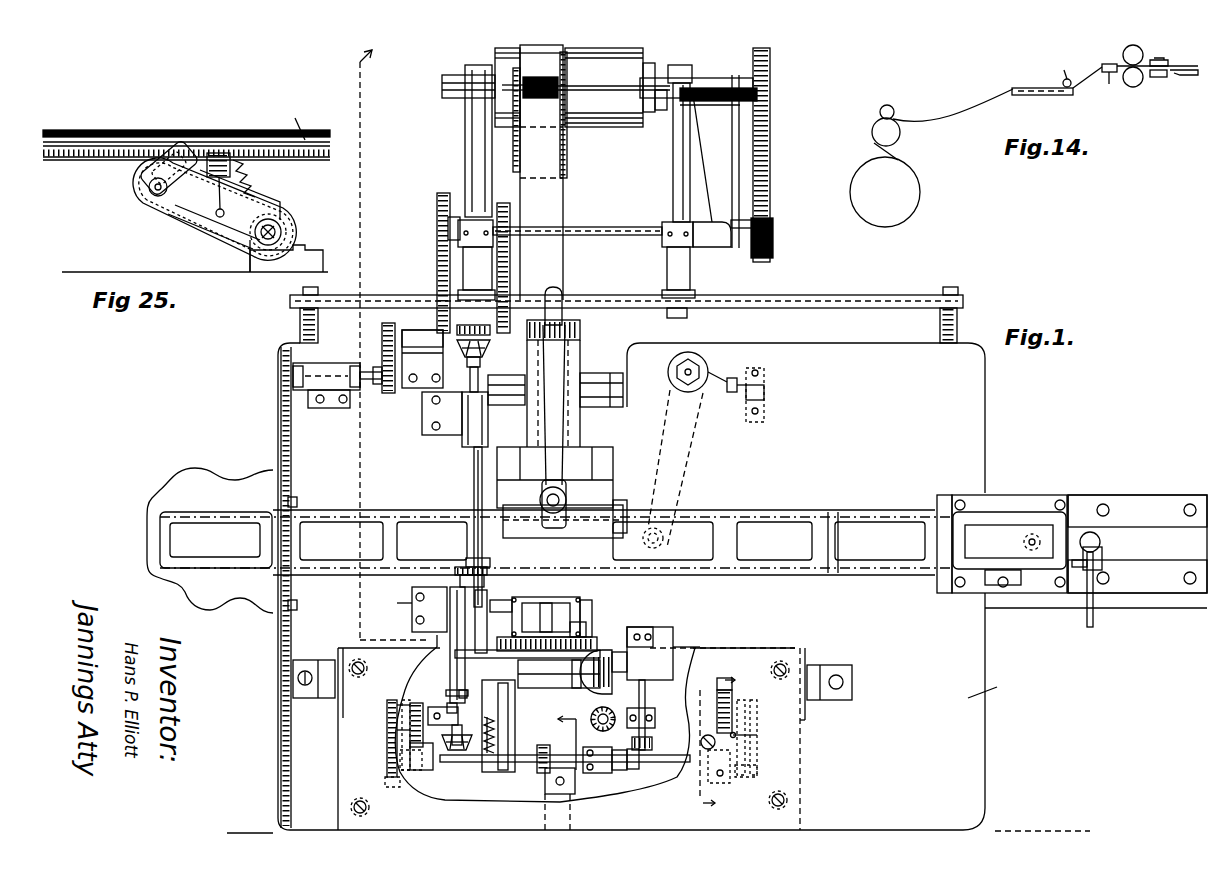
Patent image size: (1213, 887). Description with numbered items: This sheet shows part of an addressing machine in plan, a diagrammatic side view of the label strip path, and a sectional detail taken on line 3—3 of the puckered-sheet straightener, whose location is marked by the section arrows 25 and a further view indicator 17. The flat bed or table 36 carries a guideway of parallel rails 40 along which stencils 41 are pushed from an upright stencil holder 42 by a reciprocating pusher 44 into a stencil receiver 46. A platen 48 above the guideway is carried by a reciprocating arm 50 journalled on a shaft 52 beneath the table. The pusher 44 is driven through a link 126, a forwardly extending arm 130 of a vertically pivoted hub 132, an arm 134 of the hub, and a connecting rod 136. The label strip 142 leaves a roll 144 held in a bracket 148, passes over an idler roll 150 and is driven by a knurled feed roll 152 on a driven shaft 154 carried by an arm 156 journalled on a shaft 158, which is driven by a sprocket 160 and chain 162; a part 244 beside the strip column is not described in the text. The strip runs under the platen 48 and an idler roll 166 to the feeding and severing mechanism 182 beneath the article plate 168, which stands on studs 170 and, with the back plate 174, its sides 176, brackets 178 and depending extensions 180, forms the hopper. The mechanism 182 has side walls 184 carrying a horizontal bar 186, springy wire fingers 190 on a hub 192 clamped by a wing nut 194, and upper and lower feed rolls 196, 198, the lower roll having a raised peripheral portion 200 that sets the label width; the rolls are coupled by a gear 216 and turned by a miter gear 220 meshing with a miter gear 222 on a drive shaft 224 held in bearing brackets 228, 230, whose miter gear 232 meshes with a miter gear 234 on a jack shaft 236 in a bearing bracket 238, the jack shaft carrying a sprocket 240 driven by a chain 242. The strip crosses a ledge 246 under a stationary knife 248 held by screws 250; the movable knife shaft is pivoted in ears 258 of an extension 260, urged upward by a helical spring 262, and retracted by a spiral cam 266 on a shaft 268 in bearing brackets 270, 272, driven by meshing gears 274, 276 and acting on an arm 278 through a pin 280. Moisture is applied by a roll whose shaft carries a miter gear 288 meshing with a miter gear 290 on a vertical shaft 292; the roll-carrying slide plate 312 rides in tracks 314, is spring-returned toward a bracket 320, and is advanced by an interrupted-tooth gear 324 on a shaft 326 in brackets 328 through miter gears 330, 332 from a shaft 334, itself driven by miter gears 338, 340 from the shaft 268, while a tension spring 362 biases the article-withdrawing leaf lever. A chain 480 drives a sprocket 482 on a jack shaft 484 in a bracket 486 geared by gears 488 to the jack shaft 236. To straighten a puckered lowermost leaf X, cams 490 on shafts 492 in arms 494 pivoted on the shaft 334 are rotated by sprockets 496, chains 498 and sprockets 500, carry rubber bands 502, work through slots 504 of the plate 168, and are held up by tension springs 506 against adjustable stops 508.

In FIG. 1, the section line 3— 3 is at (395, 344).
In FIG. 1, the section line 17 is at (560, 741).
In FIG. 1, the sectional detail indicator 25 is at (711, 741).
In FIG. 1, the table 36 is at (998, 686).
In FIG. 1, the rails 40 is at (885, 507).
In FIG. 1, the stencils 41 is at (835, 515).
In FIG. 1, the stencil holder 42 is at (1045, 505).
In FIG. 1, the pusher 44 is at (1030, 530).
In FIG. 1, the stencil receiver 46 is at (188, 500).
In FIG. 1, the platen 48 is at (610, 496).
In FIG. 1, the reciprocating arm 50 is at (560, 437).
In FIG. 1, the shaft 52 is at (590, 373).
In FIG. 1, the link 126 is at (772, 530).
In FIG. 1, the forwardly extending arm 130 is at (675, 462).
In FIG. 1, the vertically pivoted hub 132 is at (700, 356).
In FIG. 1, the arm 134 is at (745, 370).
In FIG. 1, the connecting rod 136 is at (765, 412).
In FIG. 14, the label strip 142 is at (895, 152).
In FIG. 1, the label strip 142 is at (545, 157).
In FIG. 14, the roll 144 is at (860, 207).
In FIG. 1, the roll 144 is at (567, 166).
In FIG. 1, the bracket 148 is at (468, 268).
In FIG. 14, the idler roll 150 is at (872, 132).
In FIG. 1, the idler roll 150 is at (631, 126).
In FIG. 14, the feed roll 152 is at (880, 114).
In FIG. 1, the feed roll 152 is at (560, 80).
In FIG. 1, the driven shaft 154 is at (616, 95).
In FIG. 1, the arm 156 is at (760, 172).
In FIG. 1, the shaft 158 is at (626, 236).
In FIG. 1, the sprocket 160 is at (437, 240).
In FIG. 1, the chain 162 is at (440, 296).
In FIG. 14, the idler roll 166 is at (1059, 70).
In FIG. 1, the idler roll 166 is at (575, 637).
In FIG. 25, the plate 168 is at (320, 133).
In FIG. 1, the plate 168 is at (783, 752).
In FIG. 1, the studs 170 is at (368, 668).
In FIG. 1, the back plate 174 is at (378, 647).
In FIG. 1, the sides 176 is at (338, 710).
In FIG. 1, the brackets 178 is at (320, 660).
In FIG. 1, the depending side extensions 180 is at (345, 776).
In FIG. 1, the strip feeding and severing mechanism 182 is at (582, 615).
In FIG. 1, the side walls 184 is at (493, 621).
In FIG. 14, the horizontal bar 186 is at (1064, 85).
In FIG. 1, the springy wire fingers 190 is at (505, 600).
In FIG. 1, the hub 192 is at (543, 602).
In FIG. 1, the wing nut 194 is at (594, 625).
In FIG. 14, the upper feed roll 196 is at (1122, 55).
In FIG. 1, the upper feed roll 196 is at (576, 673).
In FIG. 14, the lower feed roll 198 is at (1133, 86).
In FIG. 14, the raised peripheral portion 200 is at (1160, 78).
In FIG. 1, the gear 216 is at (586, 624).
In FIG. 1, the miter gear 220 is at (430, 609).
In FIG. 1, the miter gear 222 is at (450, 656).
In FIG. 1, the drive shaft 224 is at (473, 478).
In FIG. 1, the bearing bracket 228 is at (460, 567).
In FIG. 1, the bearing bracket 230 is at (440, 413).
In FIG. 1, the miter gear 232 is at (471, 340).
In FIG. 1, the miter gear 234 is at (446, 356).
In FIG. 1, the jack shaft 236 is at (466, 374).
In FIG. 1, the bearing bracket 238 is at (420, 340).
In FIG. 1, the sprocket 240 is at (544, 300).
In FIG. 1, the chain 242 is at (511, 272).
In FIG. 1, the guide 244 is at (522, 209).
In FIG. 14, the supporting ledge 246 is at (1186, 76).
In FIG. 14, the stationary knife 248 is at (1159, 54).
In FIG. 1, the stationary knife 248 is at (548, 660).
In FIG. 1, the screws 250 is at (612, 648).
In FIG. 1, the ears 258 is at (500, 772).
In FIG. 1, the extension 260 is at (515, 733).
In FIG. 1, the helical spring 262 is at (510, 738).
In FIG. 1, the spiral cam 266 is at (447, 684).
In FIG. 1, the shaft 268 is at (420, 670).
In FIG. 1, the bearing bracket 270 is at (443, 726).
In FIG. 1, the bearing bracket 272 is at (392, 602).
In FIG. 1, the gear 274 is at (472, 558).
In FIG. 1, the gear 276 is at (468, 566).
In FIG. 1, the arm 278 is at (441, 702).
In FIG. 1, the pin 280 is at (471, 683).
In FIG. 1, the miter gear 288 is at (592, 712).
In FIG. 1, the miter gear 290 is at (595, 751).
In FIG. 1, the vertical shaft 292 is at (618, 749).
In FIG. 1, the slide plate 312 is at (665, 650).
In FIG. 1, the tracks 314 is at (559, 674).
In FIG. 1, the bracket 320 is at (616, 650).
In FIG. 1, the gear 324 is at (668, 627).
In FIG. 1, the shaft 326 is at (646, 697).
In FIG. 1, the brackets 328 is at (655, 718).
In FIG. 1, the miter gear 330 is at (650, 740).
In FIG. 1, the miter gear 332 is at (633, 770).
In FIG. 25, the shaft 334 is at (285, 220).
In FIG. 1, the shaft 334 is at (660, 763).
In FIG. 1, the miter gear 338 is at (458, 752).
In FIG. 1, the miter gear 340 is at (428, 771).
In FIG. 1, the tension spring 362 is at (570, 795).
In FIG. 1, the chain 480 is at (280, 405).
In FIG. 1, the sprocket 482 is at (298, 338).
In FIG. 1, the jack shaft 484 is at (366, 380).
In FIG. 1, the bracket 486 is at (330, 366).
In FIG. 1, the intermeshing gears 488 is at (383, 360).
In FIG. 25, the cams 490 is at (150, 170).
In FIG. 1, the cams 490 is at (387, 705).
In FIG. 25, the shafts 492 is at (140, 200).
In FIG. 1, the shafts 492 is at (402, 710).
In FIG. 25, the arms 494 is at (258, 205).
In FIG. 1, the arms 494 is at (400, 740).
In FIG. 25, the sprockets 496 is at (165, 222).
In FIG. 1, the sprockets 496 is at (338, 729).
In FIG. 25, the chains 498 is at (190, 230).
In FIG. 1, the chains 498 is at (400, 760).
In FIG. 25, the sprockets 500 is at (287, 232).
In FIG. 1, the sprockets 500 is at (387, 780).
In FIG. 25, the rubber bands 502 is at (203, 225).
In FIG. 1, the rubber bands 502 is at (410, 725).
In FIG. 25, the slots 504 is at (122, 156).
In FIG. 1, the slots 504 is at (728, 680).
In FIG. 25, the tension springs 506 is at (258, 182).
In FIG. 25, the adjustable stop members 508 is at (221, 150).
In FIG. 1, the adjustable stop members 508 is at (760, 727).
In FIG. 25, the puckered leaf X is at (298, 122).